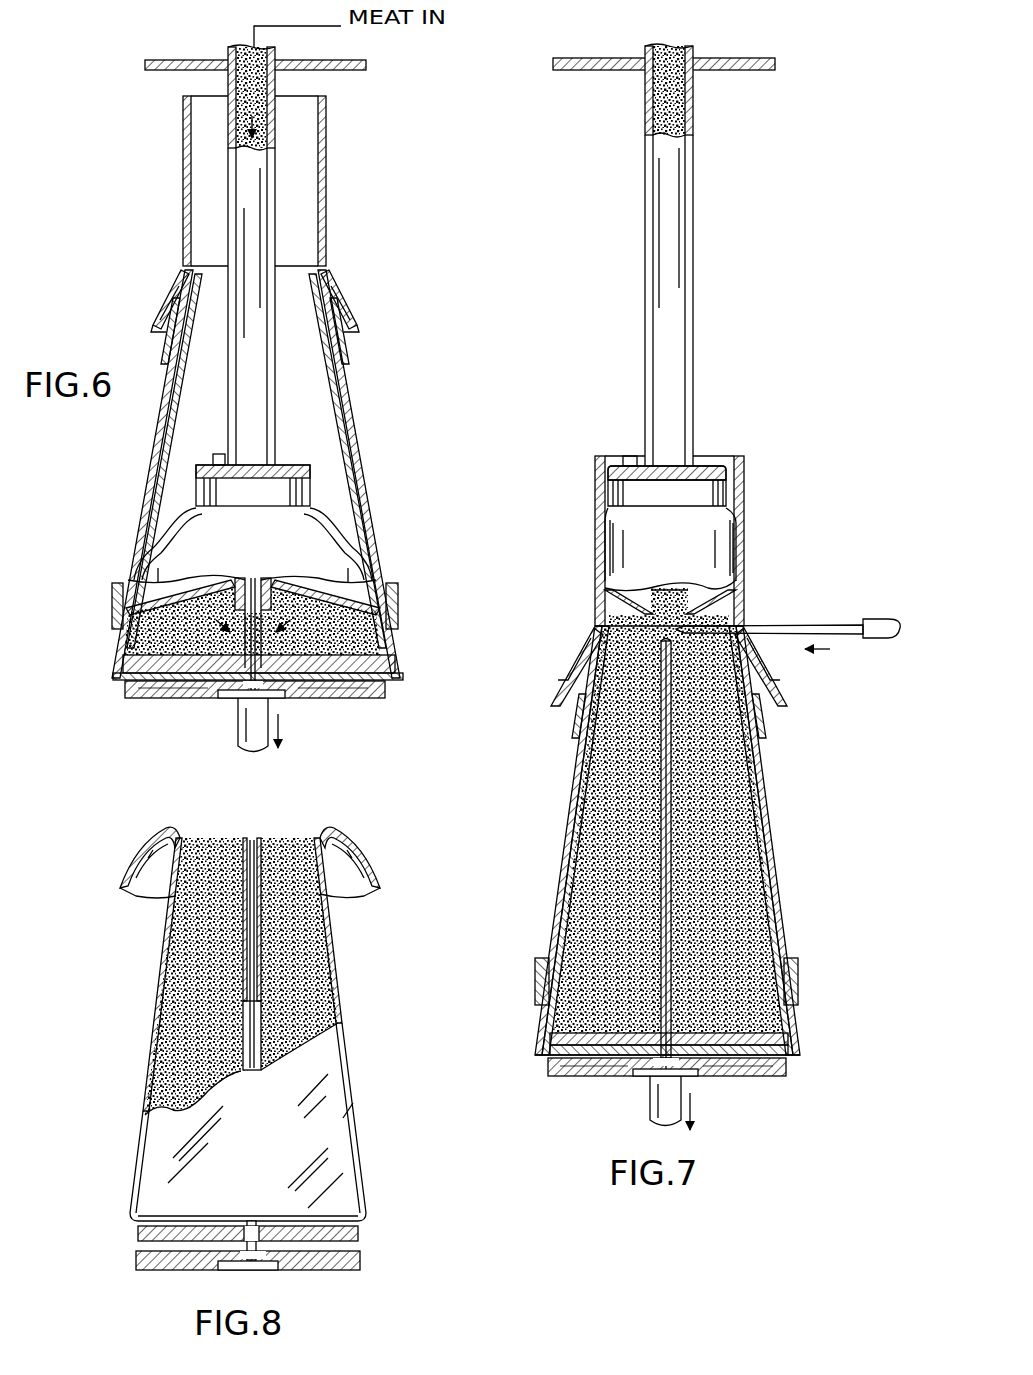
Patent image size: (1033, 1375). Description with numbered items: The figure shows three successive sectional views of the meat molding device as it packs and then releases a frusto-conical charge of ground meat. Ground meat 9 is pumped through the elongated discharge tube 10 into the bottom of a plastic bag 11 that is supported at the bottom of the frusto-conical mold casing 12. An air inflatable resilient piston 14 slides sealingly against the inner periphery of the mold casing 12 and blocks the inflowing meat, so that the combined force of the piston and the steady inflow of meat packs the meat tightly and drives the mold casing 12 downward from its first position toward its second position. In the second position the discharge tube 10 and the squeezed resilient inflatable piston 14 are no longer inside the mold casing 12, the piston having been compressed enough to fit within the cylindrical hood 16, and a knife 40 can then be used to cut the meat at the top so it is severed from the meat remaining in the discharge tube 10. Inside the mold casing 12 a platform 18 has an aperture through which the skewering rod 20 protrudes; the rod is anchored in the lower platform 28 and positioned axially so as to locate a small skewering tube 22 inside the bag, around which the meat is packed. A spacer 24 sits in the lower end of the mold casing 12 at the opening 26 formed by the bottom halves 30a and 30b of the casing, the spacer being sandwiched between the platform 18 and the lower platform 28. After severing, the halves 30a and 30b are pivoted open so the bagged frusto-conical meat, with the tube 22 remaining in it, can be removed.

In FIG. 6, the ground meat 9 is at (352, 625).
In FIG. 7, the ground meat 9 is at (728, 893).
In FIG. 8, the ground meat 9 is at (300, 970).
In FIG. 6, the discharge tube 10 is at (267, 228).
In FIG. 7, the discharge tube 10 is at (685, 182).
In FIG. 6, the plastic bag 11 is at (352, 305).
In FIG. 7, the plastic bag 11 is at (780, 676).
In FIG. 8, the plastic bag 11 is at (372, 853).
In FIG. 6, the mold casing 12 is at (372, 455).
In FIG. 7, the mold casing 12 is at (667, 840).
In FIG. 6, the air inflatable resilient piston 14 is at (183, 488).
In FIG. 7, the air inflatable resilient piston 14 is at (724, 483).
In FIG. 6, the cylindrical hood 16 is at (318, 158).
In FIG. 7, the cylindrical hood 16 is at (736, 541).
In FIG. 6, the platform 18 is at (395, 660).
In FIG. 7, the platform 18 is at (780, 1032).
In FIG. 8, the platform 18 is at (352, 1226).
In FIG. 6, the skewering rod 20 is at (165, 690).
In FIG. 7, the skewering rod 20 is at (660, 832).
In FIG. 8, the skewering rod 20 is at (238, 832).
In FIG. 6, the skewering tube 22 is at (253, 623).
In FIG. 7, the skewering tube 22 is at (665, 787).
In FIG. 8, the skewering tube 22 is at (254, 840).
In FIG. 6, the spacer 24 is at (270, 692).
In FIG. 7, the spacer 24 is at (640, 1070).
In FIG. 8, the spacer 24 is at (262, 1242).
In FIG. 6, the opening 26 is at (305, 690).
In FIG. 7, the opening 26 is at (690, 1060).
In FIG. 6, the lower platform 28 is at (378, 684).
In FIG. 7, the lower platform 28 is at (775, 1075).
In FIG. 8, the lower platform 28 is at (340, 1258).
In FIG. 6, the mold casing half 30a is at (207, 692).
In FIG. 7, the mold casing half 30a is at (557, 1070).
In FIG. 6, the mold casing half 30b is at (345, 686).
In FIG. 7, the mold casing half 30b is at (757, 1060).
In FIG. 7, the knife 40 is at (793, 620).